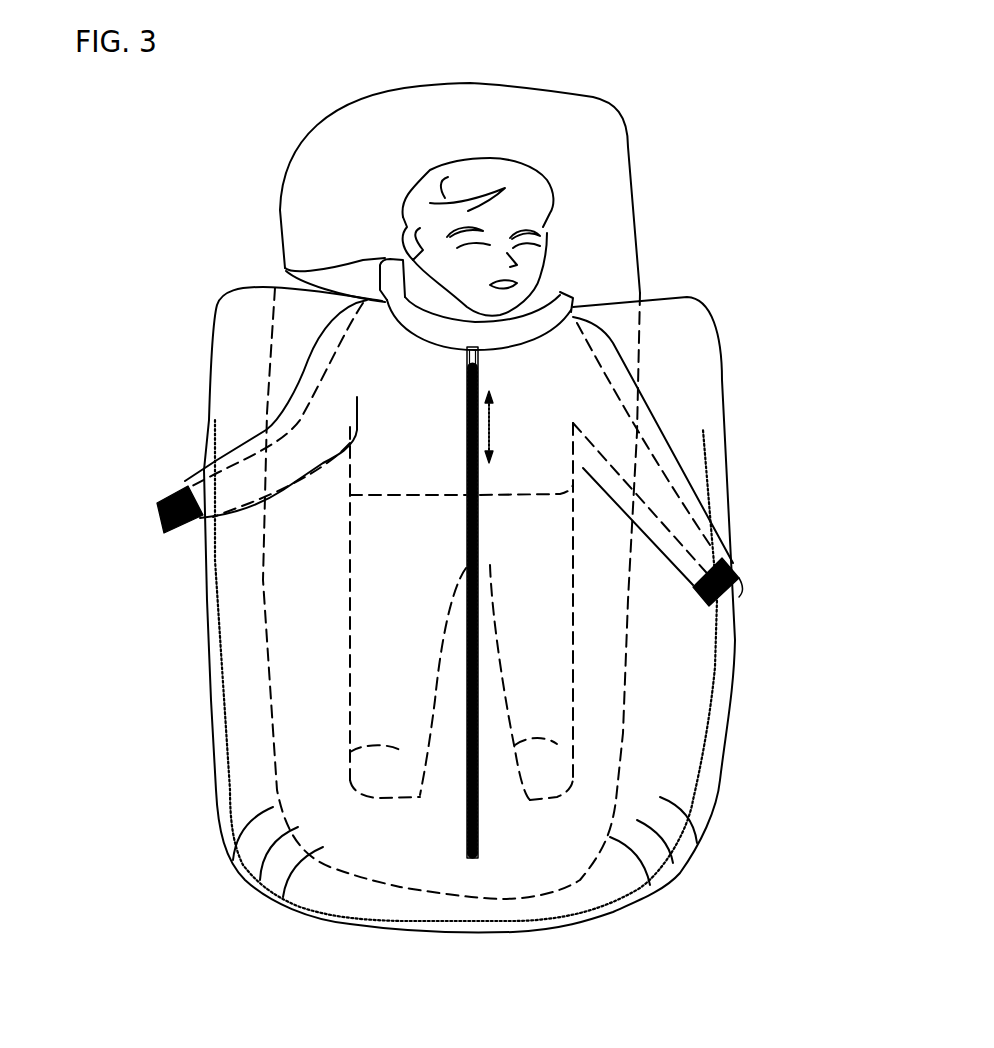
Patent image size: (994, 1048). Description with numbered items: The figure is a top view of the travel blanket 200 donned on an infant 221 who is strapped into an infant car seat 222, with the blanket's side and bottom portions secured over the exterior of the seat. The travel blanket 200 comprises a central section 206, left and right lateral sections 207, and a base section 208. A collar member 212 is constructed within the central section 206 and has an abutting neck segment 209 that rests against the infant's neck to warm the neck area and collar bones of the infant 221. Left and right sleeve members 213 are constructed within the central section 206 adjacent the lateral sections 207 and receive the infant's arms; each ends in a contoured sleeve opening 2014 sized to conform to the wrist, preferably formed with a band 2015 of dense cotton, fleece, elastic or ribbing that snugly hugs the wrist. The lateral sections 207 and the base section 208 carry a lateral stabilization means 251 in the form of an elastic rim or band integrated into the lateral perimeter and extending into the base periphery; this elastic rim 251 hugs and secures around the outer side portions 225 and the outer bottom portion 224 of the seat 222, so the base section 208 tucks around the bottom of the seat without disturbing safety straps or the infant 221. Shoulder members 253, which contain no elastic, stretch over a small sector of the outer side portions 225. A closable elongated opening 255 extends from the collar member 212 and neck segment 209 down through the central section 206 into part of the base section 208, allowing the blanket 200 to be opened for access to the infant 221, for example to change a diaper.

The travel blanket 200 is at (190, 156).
The central section 206 is at (487, 528).
The lateral sections 207 is at (243, 606).
The base section 208 is at (437, 867).
The abutting neck segment 209 is at (520, 327).
The collar member 212 is at (283, 266).
The sleeve members 213 is at (187, 484).
The infant 221 is at (413, 472).
The infant car seat 222 is at (398, 181).
The outer bottom portion 224 is at (363, 847).
The outer side portions 225 is at (265, 650).
The lateral stabilization means 251 is at (710, 648).
The shoulder members 253 is at (230, 343).
The closable elongated opening 255 is at (480, 430).
The contoured sleeve openings 2014 is at (728, 550).
The bands 2015 is at (735, 594).